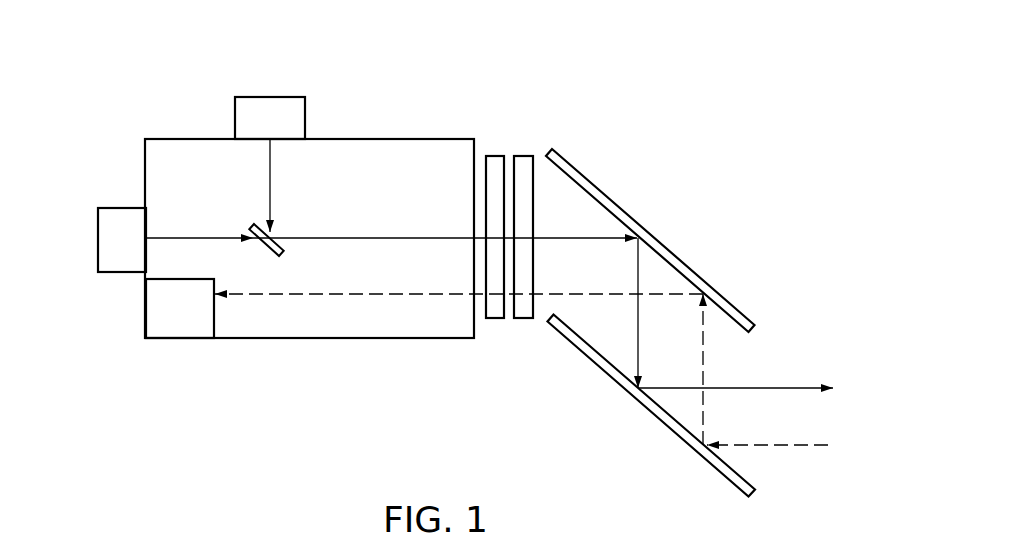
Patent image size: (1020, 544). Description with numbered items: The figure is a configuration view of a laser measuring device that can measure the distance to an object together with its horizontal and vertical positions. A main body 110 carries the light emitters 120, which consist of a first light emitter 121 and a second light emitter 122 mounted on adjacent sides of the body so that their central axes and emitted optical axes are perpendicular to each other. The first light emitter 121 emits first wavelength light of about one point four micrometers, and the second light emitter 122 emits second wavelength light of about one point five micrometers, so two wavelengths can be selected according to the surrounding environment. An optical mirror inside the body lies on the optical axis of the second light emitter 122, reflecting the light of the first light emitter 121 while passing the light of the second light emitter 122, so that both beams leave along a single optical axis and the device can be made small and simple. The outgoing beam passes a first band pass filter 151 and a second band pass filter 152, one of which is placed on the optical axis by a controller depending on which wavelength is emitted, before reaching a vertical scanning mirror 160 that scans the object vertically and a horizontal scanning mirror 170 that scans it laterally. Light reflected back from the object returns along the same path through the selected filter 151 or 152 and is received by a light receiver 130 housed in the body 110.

The housing 110 is at (393, 137).
The light emitters 120 is at (143, 16).
The first light emitter 121 is at (250, 97).
The second light emitter 122 is at (115, 208).
The light receiver 130 is at (180, 330).
The first band pass filter 151 is at (493, 156).
The second band pass filter 152 is at (522, 156).
The vertical scanning mirror 160 is at (673, 250).
The horizontal scanning mirror 170 is at (648, 412).